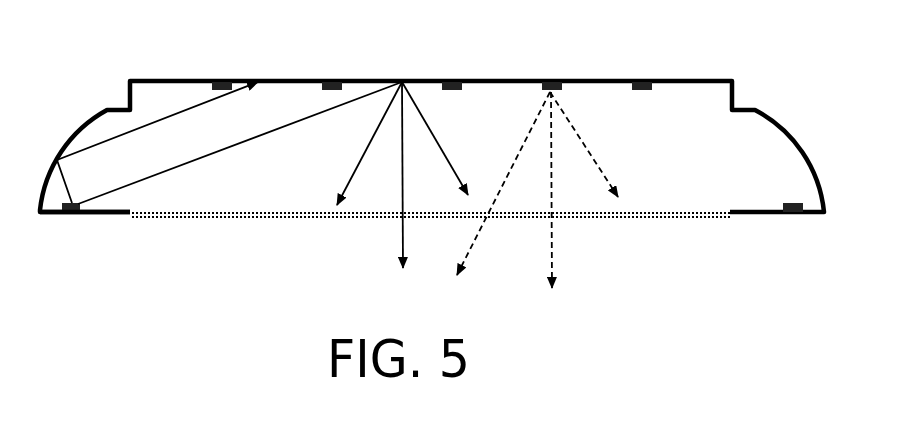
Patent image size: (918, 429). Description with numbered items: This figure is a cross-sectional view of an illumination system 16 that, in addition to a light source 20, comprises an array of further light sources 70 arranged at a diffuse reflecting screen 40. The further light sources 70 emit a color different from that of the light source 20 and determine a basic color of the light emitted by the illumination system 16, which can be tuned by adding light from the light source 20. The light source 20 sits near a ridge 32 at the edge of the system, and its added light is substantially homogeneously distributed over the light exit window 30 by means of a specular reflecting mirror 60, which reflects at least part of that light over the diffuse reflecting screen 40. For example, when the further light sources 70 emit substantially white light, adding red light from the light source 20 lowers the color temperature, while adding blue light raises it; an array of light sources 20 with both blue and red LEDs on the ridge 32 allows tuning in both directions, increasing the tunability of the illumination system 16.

The illumination system 16 is at (639, 42).
The light source 20 is at (67, 215).
The light exit window 30 is at (260, 218).
The ridge 32 is at (119, 214).
The diffuse reflecting screen 40 is at (517, 85).
The specular reflecting mirror 60 is at (102, 118).
The further light sources 70 is at (223, 78).